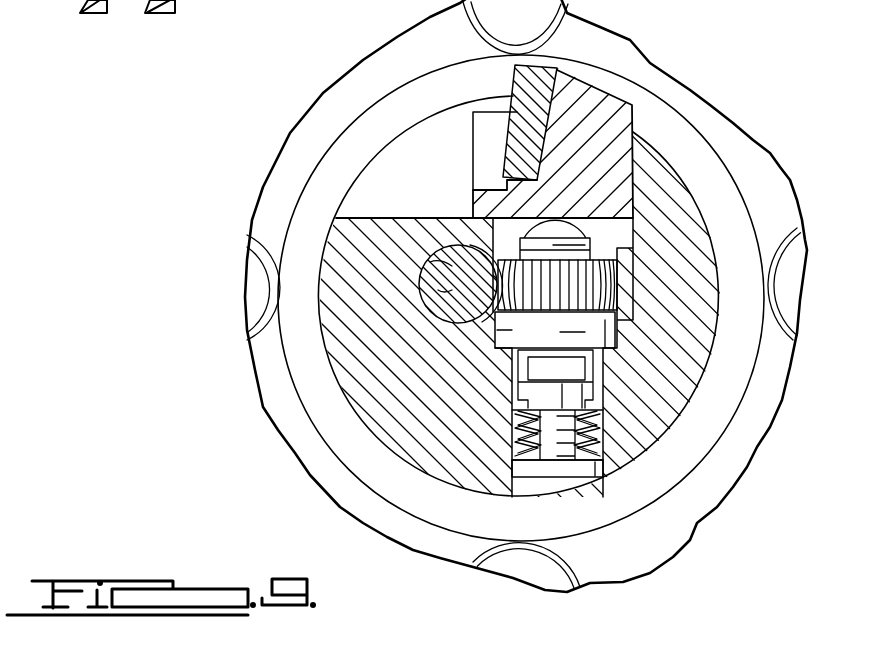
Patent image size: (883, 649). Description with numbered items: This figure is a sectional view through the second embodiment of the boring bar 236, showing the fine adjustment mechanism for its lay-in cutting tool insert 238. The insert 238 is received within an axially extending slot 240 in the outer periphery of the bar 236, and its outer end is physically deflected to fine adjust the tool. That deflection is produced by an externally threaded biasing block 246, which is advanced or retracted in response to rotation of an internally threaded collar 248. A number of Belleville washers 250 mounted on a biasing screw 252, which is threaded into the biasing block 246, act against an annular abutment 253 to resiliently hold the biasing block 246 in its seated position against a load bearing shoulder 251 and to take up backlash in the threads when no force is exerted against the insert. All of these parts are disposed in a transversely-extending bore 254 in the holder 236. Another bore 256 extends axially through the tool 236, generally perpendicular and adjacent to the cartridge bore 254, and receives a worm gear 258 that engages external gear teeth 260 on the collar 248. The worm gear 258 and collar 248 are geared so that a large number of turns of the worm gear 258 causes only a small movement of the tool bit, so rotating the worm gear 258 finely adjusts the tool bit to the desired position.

The boring bar 236 is at (727, 186).
The cutting tool insert 238 is at (610, 121).
The slot 240 is at (440, 138).
The biasing block 246 is at (480, 209).
The collar 248 is at (583, 298).
The Belleville washers 250 is at (604, 440).
The load bearing shoulder 251 is at (555, 330).
The biasing screw 252 is at (577, 470).
The annular abutment 253 is at (520, 434).
The transversely-extending bore 254 is at (530, 386).
The bore 256 is at (427, 315).
The worm gear 258 is at (447, 270).
The external gear teeth 260 is at (510, 322).